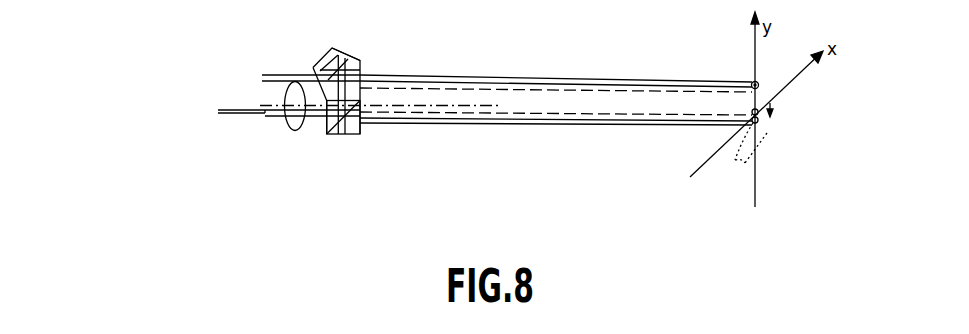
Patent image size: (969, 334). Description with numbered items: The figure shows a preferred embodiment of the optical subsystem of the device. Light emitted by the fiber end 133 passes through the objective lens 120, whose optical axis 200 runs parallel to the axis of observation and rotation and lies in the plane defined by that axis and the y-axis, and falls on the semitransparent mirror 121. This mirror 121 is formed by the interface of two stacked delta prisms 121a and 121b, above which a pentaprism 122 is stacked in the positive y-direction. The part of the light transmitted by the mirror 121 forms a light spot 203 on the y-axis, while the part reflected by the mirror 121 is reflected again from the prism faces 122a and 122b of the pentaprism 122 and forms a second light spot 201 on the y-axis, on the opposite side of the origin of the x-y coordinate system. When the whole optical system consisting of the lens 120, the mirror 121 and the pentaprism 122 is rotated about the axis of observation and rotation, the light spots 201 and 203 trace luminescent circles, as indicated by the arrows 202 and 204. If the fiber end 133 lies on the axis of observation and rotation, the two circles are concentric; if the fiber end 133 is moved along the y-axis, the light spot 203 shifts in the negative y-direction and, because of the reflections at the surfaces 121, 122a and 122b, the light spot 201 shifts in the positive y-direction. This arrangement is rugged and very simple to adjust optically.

The objective lens 120 is at (290, 93).
The fiber end 133 is at (245, 114).
The semitransparent mirror 121 is at (337, 134).
The delta prism 121a is at (326, 121).
The delta prism 121b is at (353, 134).
The pentaprism 122 is at (358, 70).
The prism face 122a is at (357, 62).
The prism face 122b is at (316, 72).
The optical axis 200 is at (468, 105).
The light spot 201 is at (752, 83).
The arrow 202 is at (758, 109).
The light spot 203 is at (752, 123).
The arrow 204 is at (772, 100).